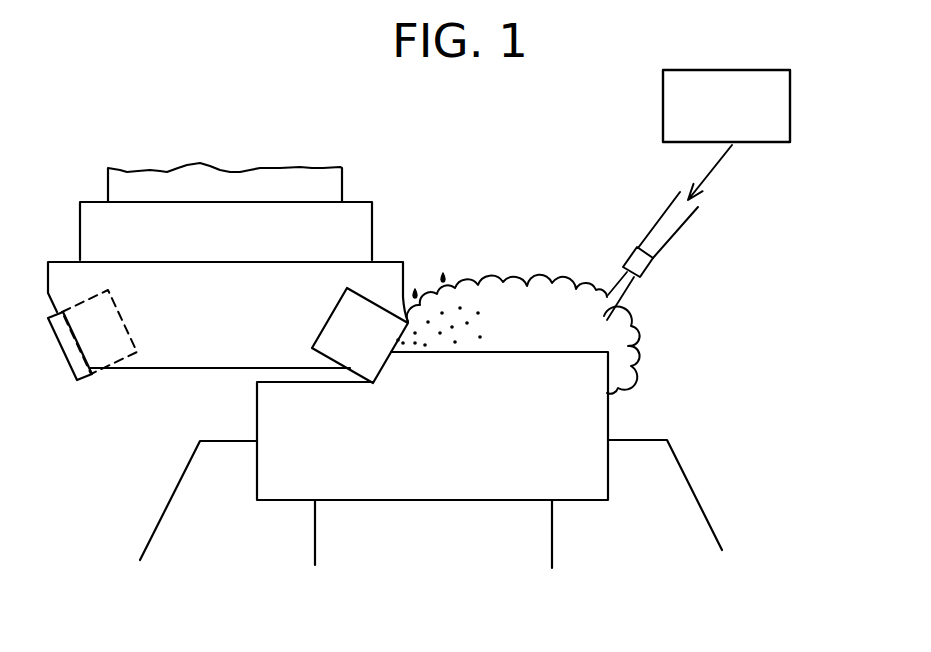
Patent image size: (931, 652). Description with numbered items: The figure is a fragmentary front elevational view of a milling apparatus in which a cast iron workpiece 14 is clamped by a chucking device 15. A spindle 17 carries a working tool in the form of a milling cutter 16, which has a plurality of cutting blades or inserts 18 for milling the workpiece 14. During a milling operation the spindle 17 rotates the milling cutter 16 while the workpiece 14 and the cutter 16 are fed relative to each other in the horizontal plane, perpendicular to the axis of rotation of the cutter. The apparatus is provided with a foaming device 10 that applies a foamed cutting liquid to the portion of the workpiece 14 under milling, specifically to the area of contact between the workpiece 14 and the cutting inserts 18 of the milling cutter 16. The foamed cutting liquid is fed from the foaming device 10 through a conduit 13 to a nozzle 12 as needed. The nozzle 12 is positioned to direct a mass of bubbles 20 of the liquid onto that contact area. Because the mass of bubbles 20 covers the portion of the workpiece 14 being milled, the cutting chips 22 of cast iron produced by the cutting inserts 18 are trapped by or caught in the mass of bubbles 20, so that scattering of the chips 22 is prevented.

The foaming device 10 is at (758, 128).
The nozzle 12 is at (644, 270).
The conduit 13 is at (707, 175).
The workpiece 14 is at (593, 418).
The chucking device 15 is at (678, 498).
The milling cutter 16 is at (147, 357).
The spindle 17 is at (330, 186).
The cutting blades or inserts 18 is at (360, 313).
The mass of bubbles 20 is at (552, 293).
The cutting chips 22 is at (458, 303).